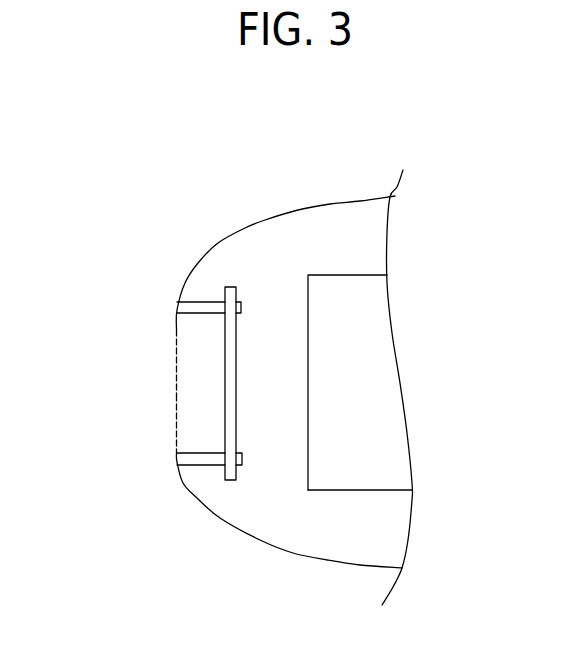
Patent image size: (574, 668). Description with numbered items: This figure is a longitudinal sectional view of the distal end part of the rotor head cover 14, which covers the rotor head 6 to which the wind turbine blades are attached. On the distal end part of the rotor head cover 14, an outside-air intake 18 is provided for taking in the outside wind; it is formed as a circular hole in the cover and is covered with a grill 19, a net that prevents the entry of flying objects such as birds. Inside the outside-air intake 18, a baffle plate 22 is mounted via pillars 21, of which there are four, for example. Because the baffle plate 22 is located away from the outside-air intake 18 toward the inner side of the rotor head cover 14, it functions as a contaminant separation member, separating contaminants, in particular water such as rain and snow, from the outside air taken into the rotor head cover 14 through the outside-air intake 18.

The rotor head cover 14 is at (265, 220).
The rotor head 6 is at (345, 273).
The outside-air intake 18 is at (175, 340).
The grill 19 is at (175, 403).
The pillars 21 is at (200, 314).
The baffle plate 22 is at (238, 395).